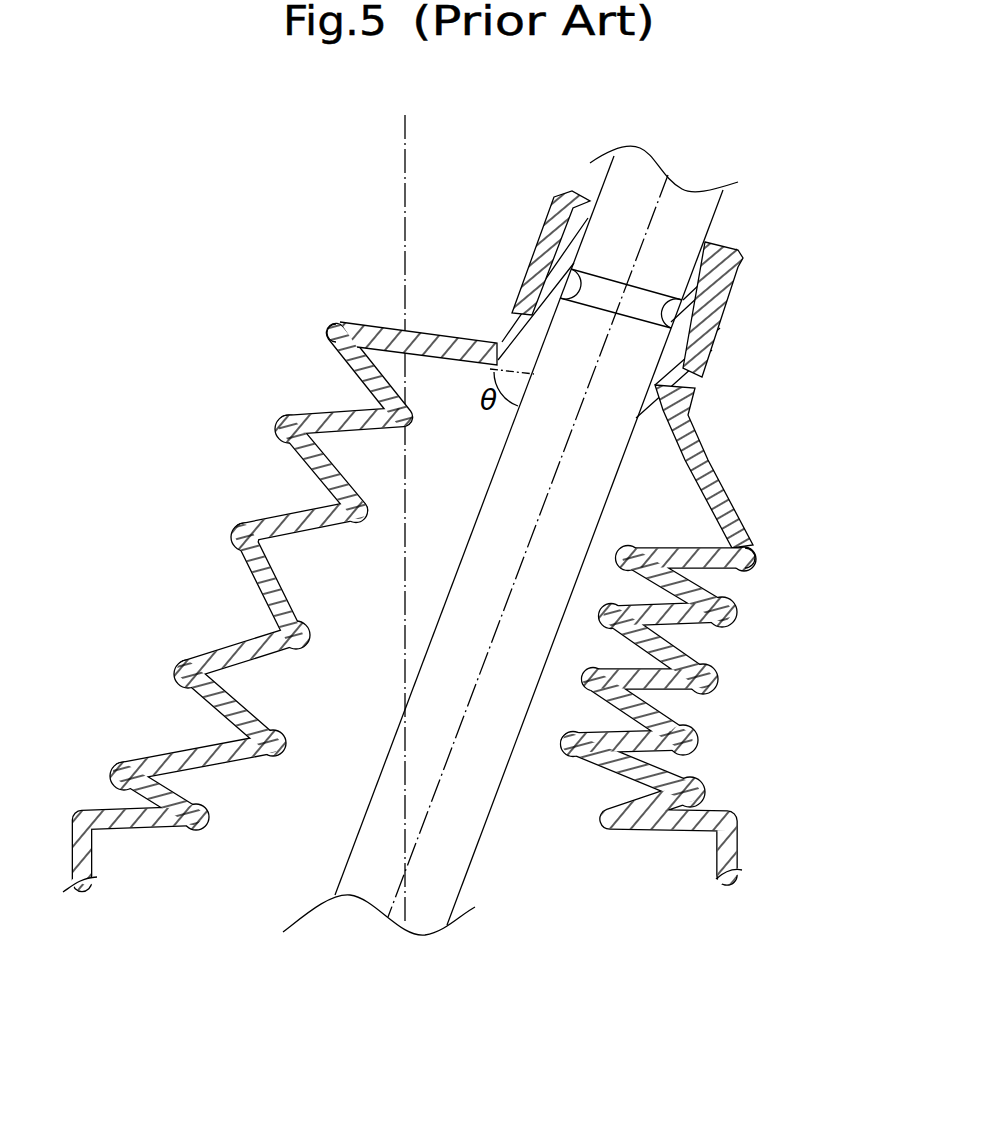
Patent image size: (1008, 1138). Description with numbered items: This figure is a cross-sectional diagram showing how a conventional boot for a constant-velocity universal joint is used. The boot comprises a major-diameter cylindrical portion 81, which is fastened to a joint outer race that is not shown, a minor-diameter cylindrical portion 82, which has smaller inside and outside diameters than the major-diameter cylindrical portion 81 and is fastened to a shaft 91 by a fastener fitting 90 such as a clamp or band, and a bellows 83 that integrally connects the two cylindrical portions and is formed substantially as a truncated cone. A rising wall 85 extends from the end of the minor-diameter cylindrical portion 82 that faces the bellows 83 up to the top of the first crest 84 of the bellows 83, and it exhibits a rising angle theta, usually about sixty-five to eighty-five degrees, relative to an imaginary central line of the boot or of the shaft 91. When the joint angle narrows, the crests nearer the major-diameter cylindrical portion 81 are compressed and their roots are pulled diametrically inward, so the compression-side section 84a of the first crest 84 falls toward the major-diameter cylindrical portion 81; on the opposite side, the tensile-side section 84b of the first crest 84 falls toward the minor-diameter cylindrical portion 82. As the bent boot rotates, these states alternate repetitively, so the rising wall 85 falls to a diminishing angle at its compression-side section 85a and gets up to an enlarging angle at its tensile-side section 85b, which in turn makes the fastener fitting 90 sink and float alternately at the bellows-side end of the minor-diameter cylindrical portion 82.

The shaft 91 is at (718, 197).
The fastener fitting 90 is at (732, 282).
The minor-diameter cylindrical portion 82 is at (745, 262).
The rising wall 85 is at (420, 324).
The compression-side section 85a is at (715, 476).
The tensile-side section 85b is at (465, 342).
The first crest 84 is at (318, 327).
The compression-side section 84a is at (748, 560).
The tensile-side section 84b is at (333, 321).
The bellows 83 is at (760, 630).
The major-diameter cylindrical portion 81 is at (740, 846).